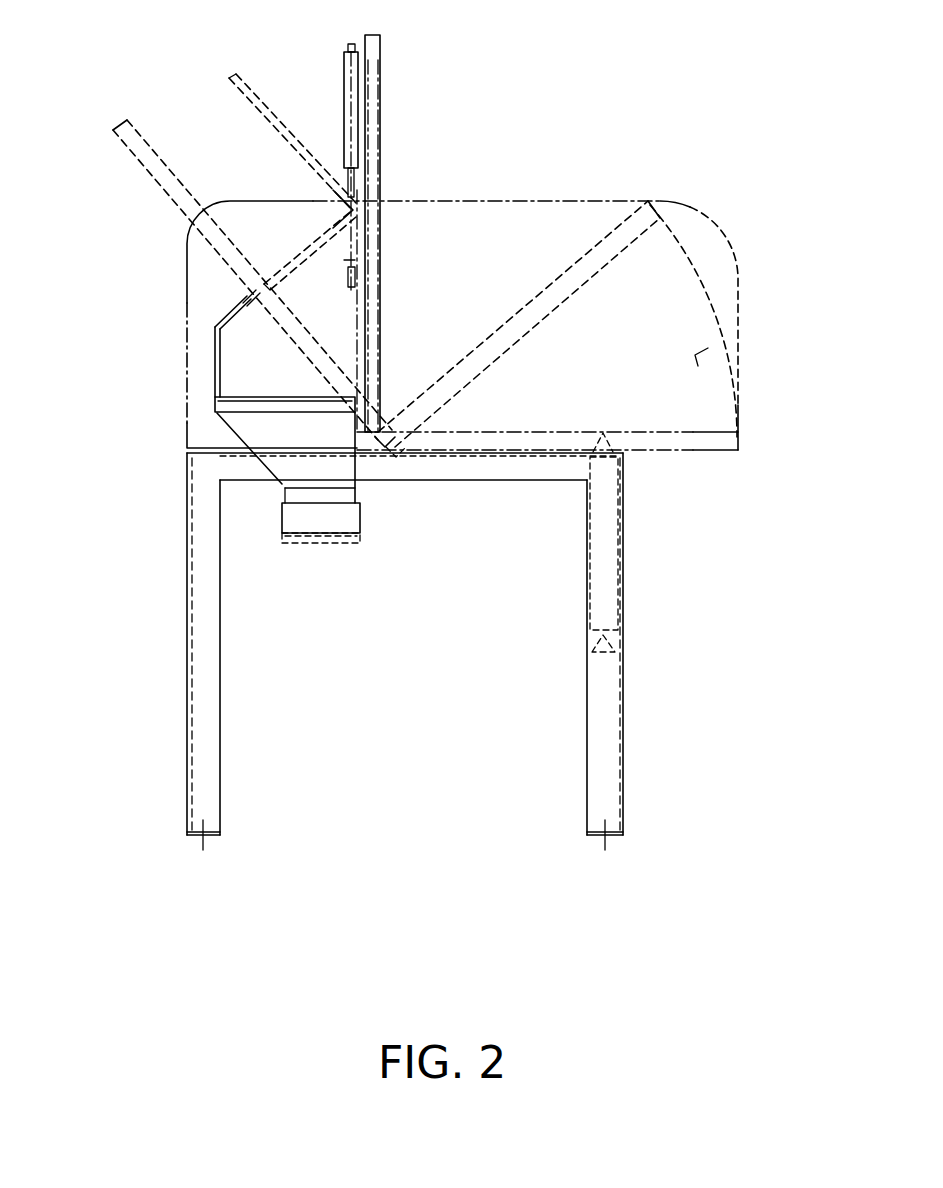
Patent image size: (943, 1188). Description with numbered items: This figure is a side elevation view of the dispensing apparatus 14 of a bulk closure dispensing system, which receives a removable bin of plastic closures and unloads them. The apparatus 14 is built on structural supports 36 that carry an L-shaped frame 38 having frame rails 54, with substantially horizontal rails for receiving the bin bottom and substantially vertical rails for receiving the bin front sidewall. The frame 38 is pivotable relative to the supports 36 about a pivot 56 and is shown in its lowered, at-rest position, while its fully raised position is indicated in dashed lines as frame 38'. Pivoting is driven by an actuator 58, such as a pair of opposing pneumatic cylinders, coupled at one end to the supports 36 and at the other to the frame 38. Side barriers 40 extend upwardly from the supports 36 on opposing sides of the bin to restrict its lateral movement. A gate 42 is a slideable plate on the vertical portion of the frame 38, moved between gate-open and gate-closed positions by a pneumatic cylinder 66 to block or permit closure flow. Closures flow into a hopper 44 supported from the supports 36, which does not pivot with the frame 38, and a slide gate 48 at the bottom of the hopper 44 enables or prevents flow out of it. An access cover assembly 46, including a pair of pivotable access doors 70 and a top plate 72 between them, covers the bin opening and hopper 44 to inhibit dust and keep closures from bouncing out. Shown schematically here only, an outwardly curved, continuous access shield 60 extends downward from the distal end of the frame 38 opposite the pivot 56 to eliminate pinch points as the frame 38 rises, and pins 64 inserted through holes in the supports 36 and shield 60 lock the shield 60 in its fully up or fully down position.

The dispensing apparatus 14 is at (611, 93).
The supports 36 is at (205, 672).
The frame 38 is at (534, 287).
The frame in fully raised position 38' is at (259, 259).
The side barriers 40 is at (717, 362).
The gate 42 is at (355, 185).
The hopper 44 is at (280, 468).
The access cover assembly 46 is at (217, 324).
The slide gate 48 is at (360, 537).
The frame rails 54 is at (713, 445).
The pivot 56 is at (357, 426).
The actuator 58 is at (610, 597).
The access shield 60 is at (693, 268).
The pins 64 is at (725, 442).
The pneumatic cylinder 66 is at (345, 82).
The access doors 70 is at (258, 380).
The top plate 72 is at (235, 286).